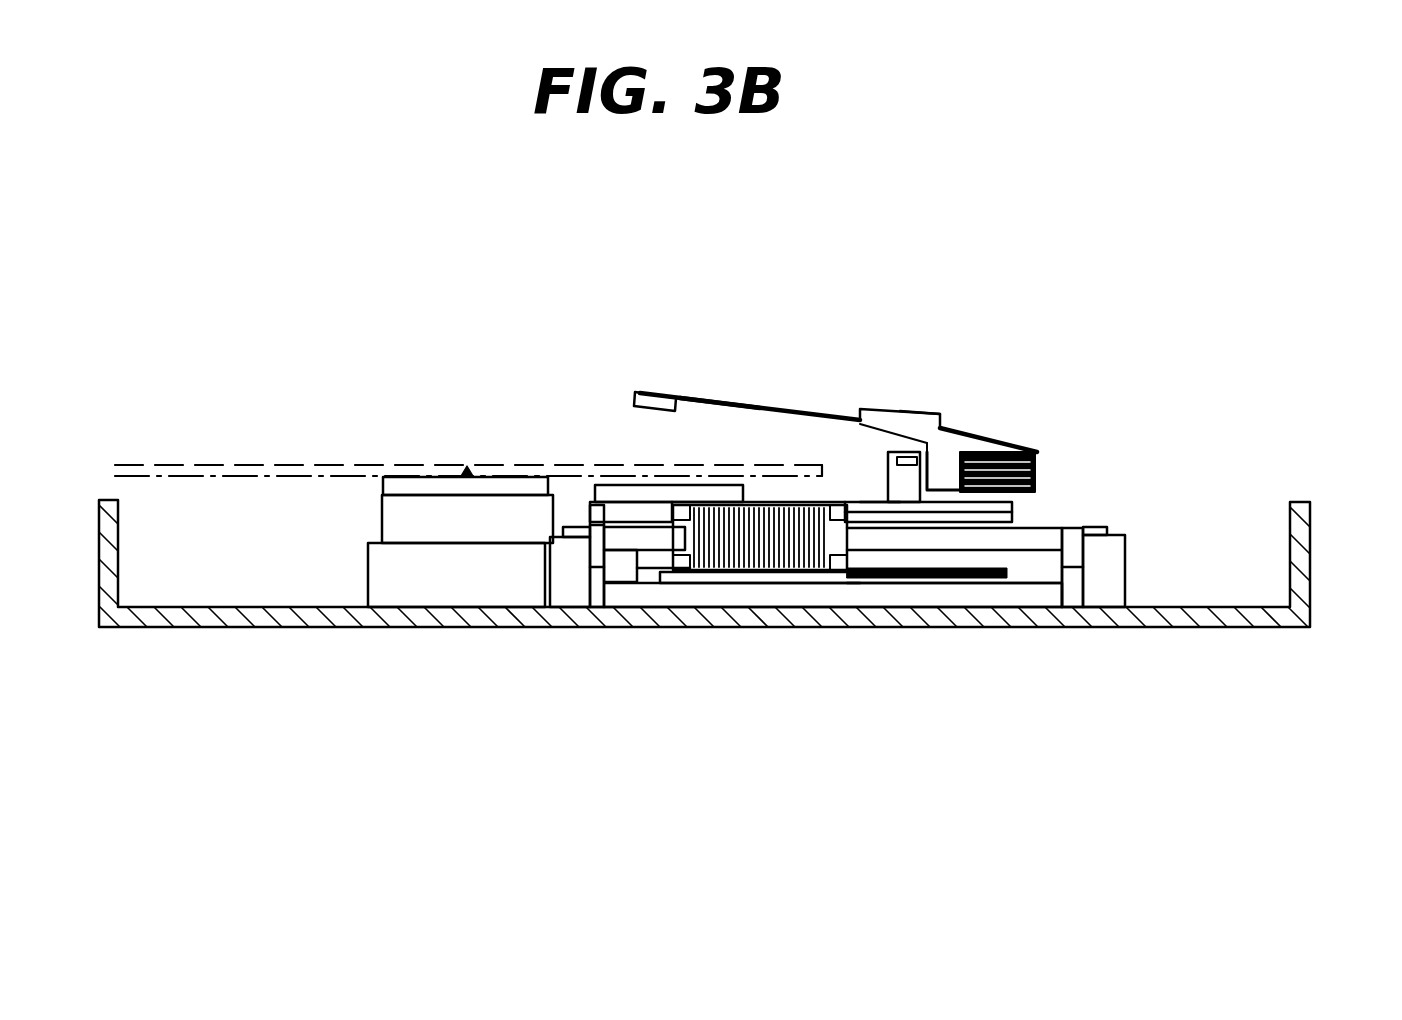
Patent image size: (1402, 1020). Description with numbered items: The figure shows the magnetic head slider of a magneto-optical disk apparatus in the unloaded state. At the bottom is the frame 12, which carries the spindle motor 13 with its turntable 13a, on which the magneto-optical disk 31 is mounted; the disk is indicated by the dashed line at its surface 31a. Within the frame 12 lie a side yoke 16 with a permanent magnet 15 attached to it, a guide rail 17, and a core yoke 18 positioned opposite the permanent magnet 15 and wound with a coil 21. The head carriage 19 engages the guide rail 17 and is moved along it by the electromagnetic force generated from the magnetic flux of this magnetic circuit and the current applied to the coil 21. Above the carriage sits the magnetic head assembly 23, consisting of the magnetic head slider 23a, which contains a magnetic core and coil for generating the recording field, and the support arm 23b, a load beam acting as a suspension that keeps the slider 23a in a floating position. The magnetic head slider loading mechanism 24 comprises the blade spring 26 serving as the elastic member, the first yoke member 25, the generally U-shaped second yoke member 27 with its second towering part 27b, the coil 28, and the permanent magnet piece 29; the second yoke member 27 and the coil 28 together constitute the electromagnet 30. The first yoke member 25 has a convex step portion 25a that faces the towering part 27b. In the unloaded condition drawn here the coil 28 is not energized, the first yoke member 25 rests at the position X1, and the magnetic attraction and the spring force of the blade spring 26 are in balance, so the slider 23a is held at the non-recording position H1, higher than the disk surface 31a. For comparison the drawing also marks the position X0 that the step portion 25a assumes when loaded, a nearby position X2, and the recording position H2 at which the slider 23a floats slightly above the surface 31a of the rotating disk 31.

The frame 12 is at (1312, 535).
The spindle motor 13 is at (393, 522).
The turntable 13a is at (413, 477).
The permanent magnet 15 is at (825, 575).
The side yoke 16 is at (757, 607).
The guide rail 17 is at (1017, 560).
The core yoke 18 is at (910, 540).
The head carriage 19 is at (983, 510).
The coil 21 is at (698, 583).
The magnetic head assembly 23 is at (850, 403).
The magnetic head slider 23a is at (635, 396).
The support arm 23b is at (695, 402).
The magnetic head slider loading mechanism 24 is at (950, 393).
The first yoke member 25 is at (878, 410).
The convex step portion 25a is at (910, 425).
The blade spring 26 is at (972, 440).
The second yoke member 27 is at (1010, 494).
The second towering part 27b is at (885, 500).
The coil 28 is at (1040, 450).
The permanent magnet piece 29 is at (905, 466).
The electromagnet 30 is at (1050, 467).
The magneto-optical disk 31 is at (190, 462).
The surface of the magneto-optical disk 31a is at (303, 463).
The non-recording position H1 is at (635, 400).
The recording position H2 is at (640, 468).
The loaded position of the convex step portion X0 is at (880, 450).
The unloaded position of the convex step portion X1 is at (880, 433).
The position near X0 X2 is at (880, 442).